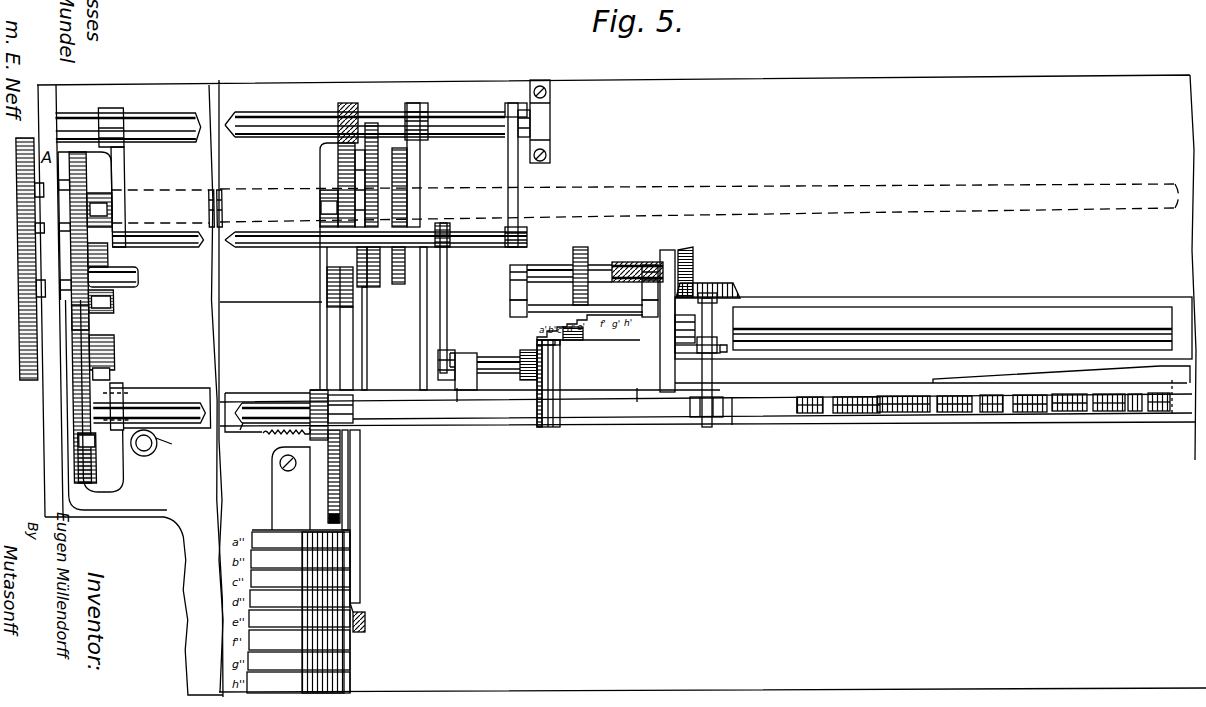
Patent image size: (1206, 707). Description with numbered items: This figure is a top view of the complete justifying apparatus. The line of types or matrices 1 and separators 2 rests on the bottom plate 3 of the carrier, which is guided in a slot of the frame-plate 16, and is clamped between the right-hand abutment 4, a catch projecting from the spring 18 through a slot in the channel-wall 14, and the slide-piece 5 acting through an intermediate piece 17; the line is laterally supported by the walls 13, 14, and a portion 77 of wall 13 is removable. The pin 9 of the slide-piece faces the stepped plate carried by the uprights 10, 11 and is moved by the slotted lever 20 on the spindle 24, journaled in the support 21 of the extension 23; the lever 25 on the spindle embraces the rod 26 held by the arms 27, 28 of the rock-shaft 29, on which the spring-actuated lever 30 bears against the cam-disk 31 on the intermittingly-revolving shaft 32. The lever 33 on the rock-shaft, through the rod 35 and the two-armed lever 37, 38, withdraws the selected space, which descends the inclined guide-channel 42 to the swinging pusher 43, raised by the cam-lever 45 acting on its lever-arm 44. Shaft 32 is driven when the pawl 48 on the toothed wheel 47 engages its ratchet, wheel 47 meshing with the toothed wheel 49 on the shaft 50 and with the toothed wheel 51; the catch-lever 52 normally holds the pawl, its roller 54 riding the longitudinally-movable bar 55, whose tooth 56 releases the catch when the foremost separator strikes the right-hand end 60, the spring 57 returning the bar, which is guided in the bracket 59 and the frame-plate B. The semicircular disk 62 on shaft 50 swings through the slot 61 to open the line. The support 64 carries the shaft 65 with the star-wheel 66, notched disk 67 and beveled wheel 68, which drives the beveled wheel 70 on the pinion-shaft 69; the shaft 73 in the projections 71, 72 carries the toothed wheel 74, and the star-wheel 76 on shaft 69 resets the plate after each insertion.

The types or matrices 1 is at (816, 418).
The separators 2 is at (872, 418).
The bottom plate of the carrier 3 is at (930, 295).
The right-hand abutment 4 is at (1170, 396).
The slide-piece 5 is at (620, 408).
The pin 9 is at (560, 345).
The upright 10 is at (518, 308).
The upright 11 is at (650, 308).
The wall 13 is at (1180, 420).
The channel-wall 14 is at (706, 397).
The frame-plate 16 is at (621, 386).
The intermediate piece 17 is at (740, 402).
The spring 18 is at (1160, 383).
The slotted lever 20 is at (536, 356).
The support 21 is at (463, 371).
The extension of slide-piece 23 is at (497, 411).
The spindle 24 is at (500, 352).
The lever 25 is at (448, 287).
The rod 26 is at (295, 244).
The arm 27 is at (122, 177).
The arm 28 is at (511, 180).
The rock-shaft 29 is at (280, 127).
The spring-actuated lever 30 is at (420, 152).
The cam-disk 31 is at (382, 205).
The intermittingly-revolving shaft 32 is at (212, 208).
The lever 33 is at (346, 106).
The rod 35 is at (366, 617).
The arm of two-armed spring-actuated lever 37 is at (361, 503).
The roller-arm 38 is at (367, 333).
The inclined guide-channel 42 is at (348, 476).
The swinging pusher 43 is at (341, 492).
The lever-arm of the pusher 44 is at (339, 328).
The cam-lever 45 is at (351, 185).
The toothed wheel 47 is at (80, 317).
The pawl 48 is at (100, 301).
The toothed wheel 49 is at (87, 458).
The shaft 50 is at (180, 398).
The toothed wheel 51 is at (86, 172).
The catch-lever 52 is at (102, 358).
The roller 54 is at (146, 451).
The longitudinally-movable bar 55 is at (239, 434).
The tooth 56 is at (173, 446).
The spring 57 is at (282, 444).
The bracket 59 is at (125, 399).
The right-hand end of bar 60 is at (340, 395).
The slot 61 is at (340, 388).
The semicircular disk 62 is at (334, 492).
The support 64 is at (690, 321).
The shaft 65 is at (686, 329).
The star-wheel 66 is at (688, 408).
The notched disk 67 is at (714, 362).
The beveled wheel 68 is at (728, 292).
The pinion-shaft 69 is at (137, 280).
The beveled wheel 70 is at (694, 264).
The projection 71 is at (518, 282).
The projection 72 is at (650, 282).
The shaft 73 is at (560, 264).
The toothed wheel 74 is at (590, 262).
The star-wheel 76 is at (62, 287).
The removable portion of wall 77 is at (1095, 418).
The frame-plate B is at (299, 488).